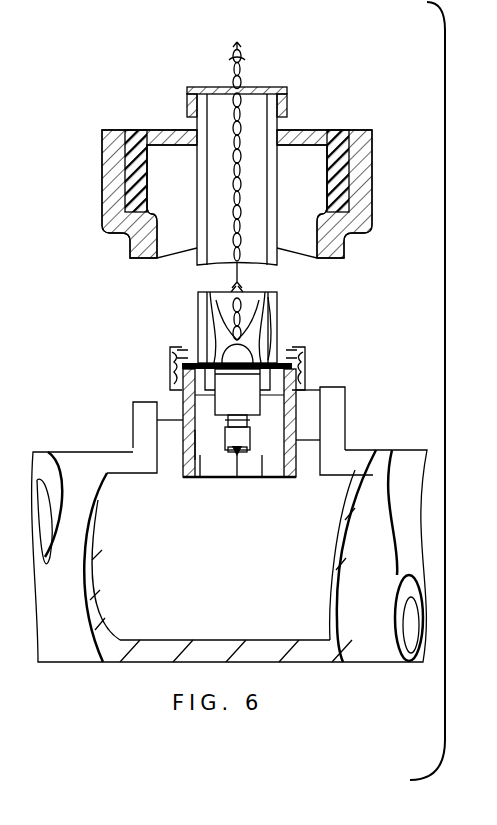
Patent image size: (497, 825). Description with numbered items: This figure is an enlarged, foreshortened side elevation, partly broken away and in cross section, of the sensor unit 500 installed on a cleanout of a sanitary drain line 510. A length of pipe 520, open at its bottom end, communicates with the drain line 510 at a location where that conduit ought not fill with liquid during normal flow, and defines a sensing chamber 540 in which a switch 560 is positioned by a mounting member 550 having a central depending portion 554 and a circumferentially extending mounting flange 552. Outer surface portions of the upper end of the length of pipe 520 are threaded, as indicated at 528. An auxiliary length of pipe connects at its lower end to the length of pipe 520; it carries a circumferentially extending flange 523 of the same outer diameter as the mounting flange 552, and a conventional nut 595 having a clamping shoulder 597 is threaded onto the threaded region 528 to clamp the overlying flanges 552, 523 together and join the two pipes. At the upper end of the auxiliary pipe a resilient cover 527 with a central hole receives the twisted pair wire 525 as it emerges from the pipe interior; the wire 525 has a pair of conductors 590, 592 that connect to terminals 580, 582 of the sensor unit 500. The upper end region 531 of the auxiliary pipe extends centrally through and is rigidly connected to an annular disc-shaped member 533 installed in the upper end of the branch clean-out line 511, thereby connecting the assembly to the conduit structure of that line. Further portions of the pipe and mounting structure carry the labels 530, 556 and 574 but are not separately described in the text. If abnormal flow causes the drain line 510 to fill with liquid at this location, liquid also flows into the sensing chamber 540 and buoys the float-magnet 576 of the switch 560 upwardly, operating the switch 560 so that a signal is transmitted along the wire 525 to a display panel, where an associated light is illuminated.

The sensor unit 500 is at (300, 331).
The sanitary drain line 510 is at (72, 668).
The branch clean-out line 511 is at (355, 243).
The length of pipe 520 is at (305, 418).
The circumferentially extending flange 523 is at (298, 353).
The twisted pair wire 525 is at (258, 118).
The resilient cover 527 is at (190, 86).
The threaded upper end region 528 is at (184, 383).
The chamber 530 is at (261, 481).
The upper end region 531 is at (342, 136).
The annular disc-shaped member 533 is at (137, 127).
The sensing chamber 540 is at (205, 481).
The mounting member 550 is at (297, 386).
The mounting flange 552 is at (198, 406).
The central depending portion 554 is at (133, 421).
The passage 556 is at (184, 478).
The switch 560 is at (240, 481).
The passage 574 is at (320, 436).
The float-magnet 576 is at (256, 462).
The terminal 580 is at (198, 331).
The terminal 582 is at (284, 332).
The chain 590 is at (240, 58).
The conductor 592 is at (203, 58).
The nut 595 is at (305, 366).
The clamping shoulder 597 is at (176, 360).